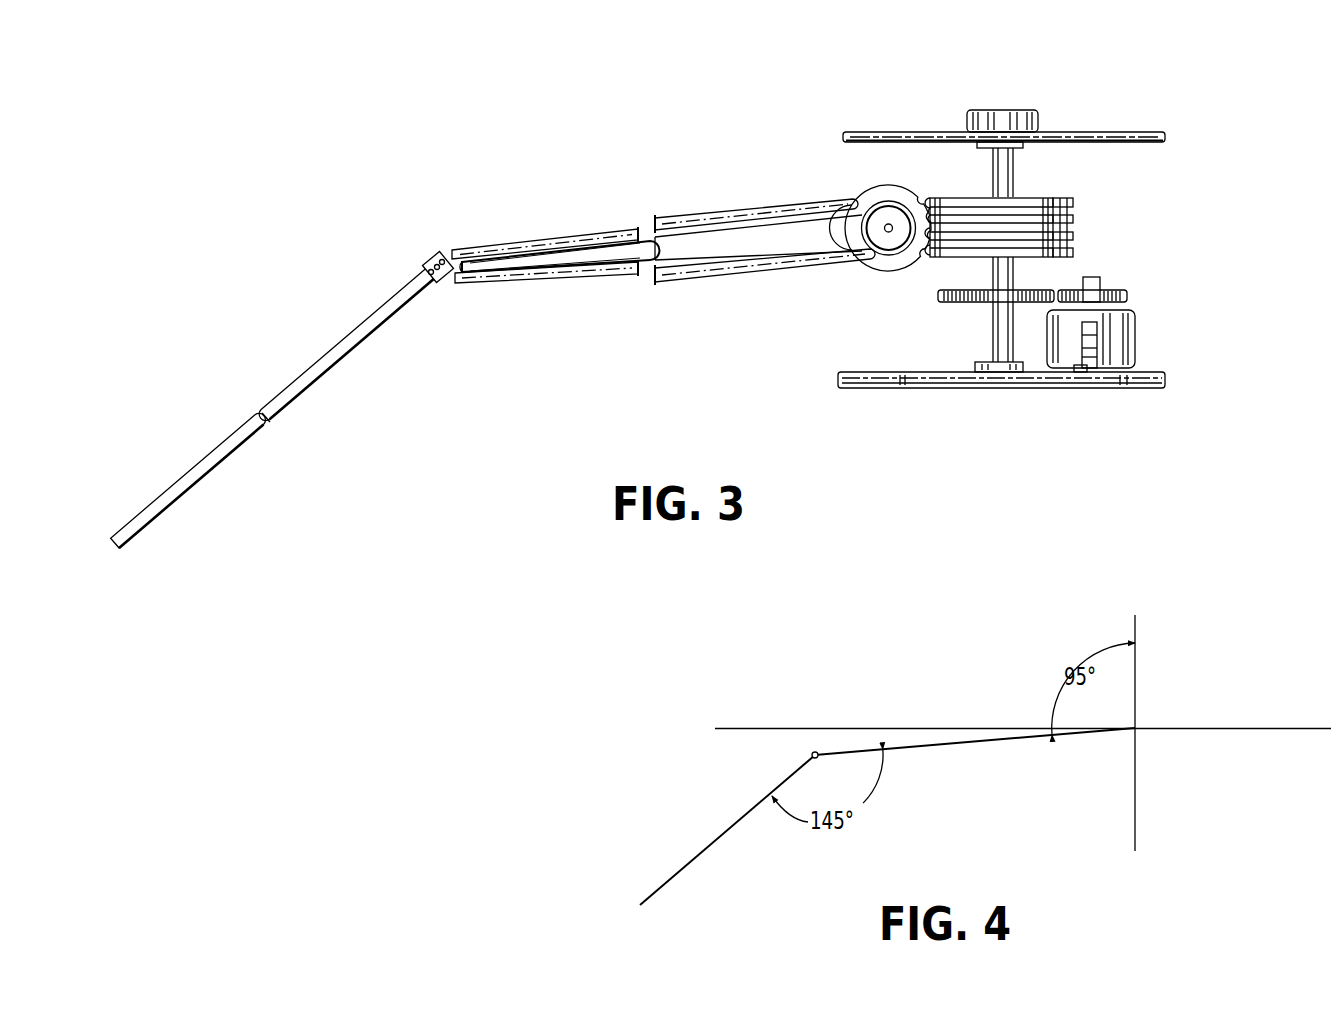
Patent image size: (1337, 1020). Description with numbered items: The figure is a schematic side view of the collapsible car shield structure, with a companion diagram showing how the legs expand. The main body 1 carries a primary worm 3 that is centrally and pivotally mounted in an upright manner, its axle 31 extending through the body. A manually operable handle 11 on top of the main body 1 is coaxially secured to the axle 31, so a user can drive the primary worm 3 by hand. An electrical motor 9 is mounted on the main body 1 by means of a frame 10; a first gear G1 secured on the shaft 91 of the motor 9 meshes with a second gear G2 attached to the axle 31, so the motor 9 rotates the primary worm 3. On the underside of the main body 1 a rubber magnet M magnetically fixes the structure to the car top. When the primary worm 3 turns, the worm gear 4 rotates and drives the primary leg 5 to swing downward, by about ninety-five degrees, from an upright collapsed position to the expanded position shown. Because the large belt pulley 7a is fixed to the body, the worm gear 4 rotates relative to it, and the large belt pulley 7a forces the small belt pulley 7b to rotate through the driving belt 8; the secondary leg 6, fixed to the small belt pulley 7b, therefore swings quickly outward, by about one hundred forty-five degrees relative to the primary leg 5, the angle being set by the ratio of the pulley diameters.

In FIG. 3, the main body 1 is at (1113, 132).
In FIG. 3, the manually operable handle 11 is at (1018, 110).
In FIG. 3, the axle 31 is at (998, 168).
In FIG. 3, the primary worm 3 is at (1050, 197).
In FIG. 3, the worm gear 4 is at (867, 195).
In FIG. 3, the large belt pulley 7a is at (882, 248).
In FIG. 3, the driving belt 8 is at (683, 218).
In FIG. 3, the primary leg 5 is at (506, 256).
In FIG. 4, the primary leg 5 is at (975, 743).
In FIG. 3, the small belt pulley 7b is at (423, 257).
In FIG. 3, the secondary leg 6 is at (333, 353).
In FIG. 4, the secondary leg 6 is at (713, 842).
In FIG. 3, the second gear G2 is at (945, 302).
In FIG. 3, the first gear G1 is at (1126, 289).
In FIG. 3, the shaft 91 is at (1106, 279).
In FIG. 3, the electrical motor 9 is at (1136, 336).
In FIG. 3, the frame 10 is at (1079, 372).
In FIG. 3, the rubber magnet M is at (960, 388).